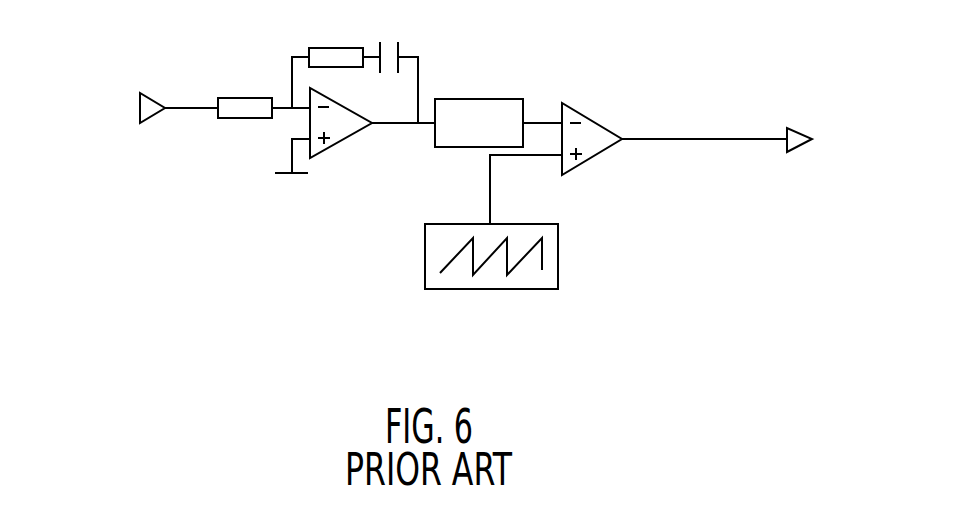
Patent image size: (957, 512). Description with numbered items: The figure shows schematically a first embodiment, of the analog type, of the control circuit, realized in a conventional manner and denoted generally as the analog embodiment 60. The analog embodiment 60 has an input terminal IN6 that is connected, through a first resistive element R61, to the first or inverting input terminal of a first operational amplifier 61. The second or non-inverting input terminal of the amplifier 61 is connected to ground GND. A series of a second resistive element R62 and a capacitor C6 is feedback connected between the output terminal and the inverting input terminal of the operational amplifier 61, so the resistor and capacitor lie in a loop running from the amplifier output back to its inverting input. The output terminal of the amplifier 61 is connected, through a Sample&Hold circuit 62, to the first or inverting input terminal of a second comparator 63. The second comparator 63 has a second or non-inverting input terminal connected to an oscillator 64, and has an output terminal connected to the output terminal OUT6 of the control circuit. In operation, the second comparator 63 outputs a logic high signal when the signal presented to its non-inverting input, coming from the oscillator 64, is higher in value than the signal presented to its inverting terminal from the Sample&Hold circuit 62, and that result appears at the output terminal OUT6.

The analog embodiment 60 is at (461, 200).
The first operational amplifier 61 is at (345, 128).
The Sample&Hold circuit 62 is at (483, 108).
The second comparator 63 is at (597, 132).
The oscillator 64 is at (433, 276).
The first resistive element R61 is at (245, 91).
The second resistive element R62 is at (336, 40).
The capacitor C6 is at (391, 40).
The input terminal IN6 is at (140, 108).
The output terminal OUT6 is at (795, 132).
The ground GND is at (293, 177).